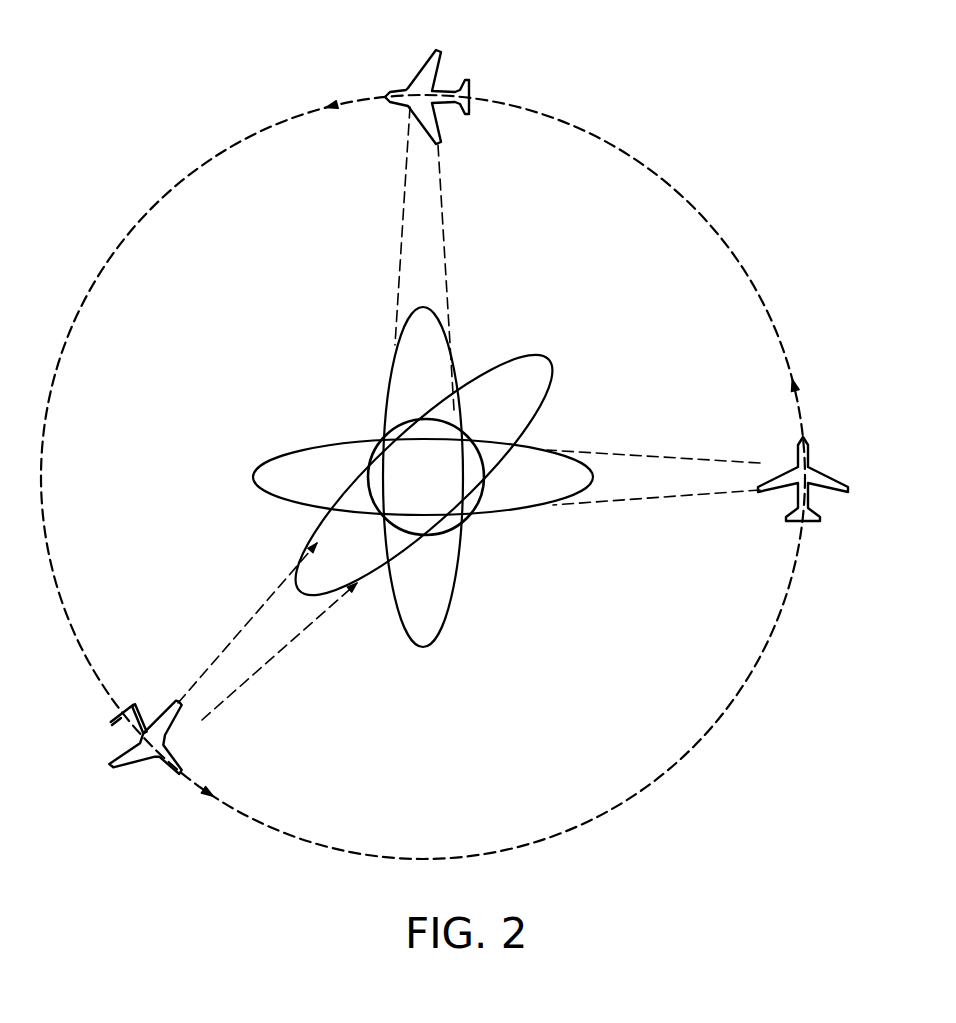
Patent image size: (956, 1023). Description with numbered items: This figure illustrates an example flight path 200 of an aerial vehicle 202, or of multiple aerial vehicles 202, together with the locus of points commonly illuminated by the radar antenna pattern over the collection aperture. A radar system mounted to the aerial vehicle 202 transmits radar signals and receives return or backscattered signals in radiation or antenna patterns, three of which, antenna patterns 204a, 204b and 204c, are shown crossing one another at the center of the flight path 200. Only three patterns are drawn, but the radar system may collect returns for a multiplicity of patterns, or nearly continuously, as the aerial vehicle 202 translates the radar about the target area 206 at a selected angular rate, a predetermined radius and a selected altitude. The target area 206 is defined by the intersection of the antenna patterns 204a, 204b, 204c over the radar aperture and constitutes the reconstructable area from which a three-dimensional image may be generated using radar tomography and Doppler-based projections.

The flight path 200 is at (423, 455).
The aerial vehicle 202 is at (403, 90).
The antenna pattern 204a is at (538, 354).
The antenna pattern 204b is at (270, 500).
The antenna pattern 204c is at (443, 632).
The target area 206 is at (380, 436).